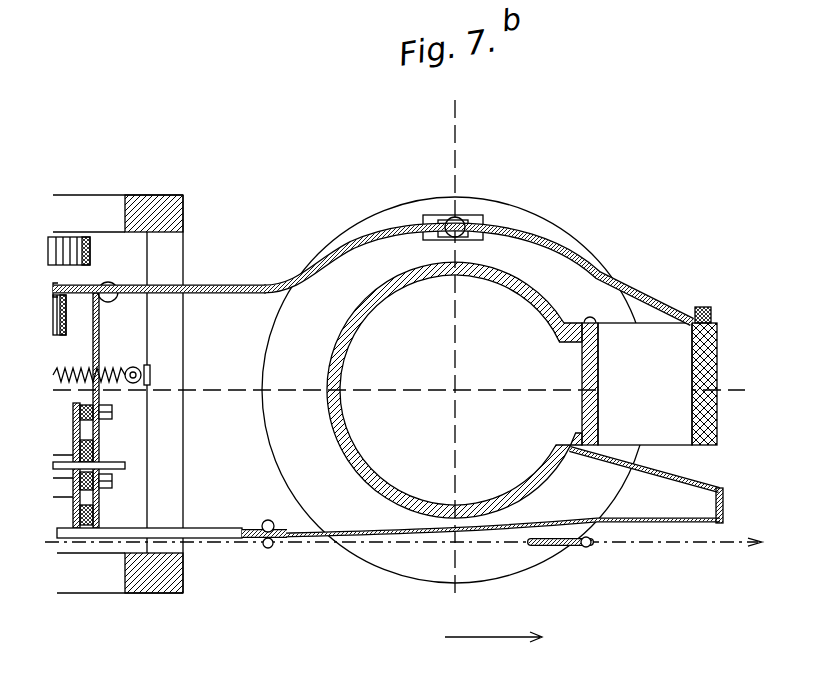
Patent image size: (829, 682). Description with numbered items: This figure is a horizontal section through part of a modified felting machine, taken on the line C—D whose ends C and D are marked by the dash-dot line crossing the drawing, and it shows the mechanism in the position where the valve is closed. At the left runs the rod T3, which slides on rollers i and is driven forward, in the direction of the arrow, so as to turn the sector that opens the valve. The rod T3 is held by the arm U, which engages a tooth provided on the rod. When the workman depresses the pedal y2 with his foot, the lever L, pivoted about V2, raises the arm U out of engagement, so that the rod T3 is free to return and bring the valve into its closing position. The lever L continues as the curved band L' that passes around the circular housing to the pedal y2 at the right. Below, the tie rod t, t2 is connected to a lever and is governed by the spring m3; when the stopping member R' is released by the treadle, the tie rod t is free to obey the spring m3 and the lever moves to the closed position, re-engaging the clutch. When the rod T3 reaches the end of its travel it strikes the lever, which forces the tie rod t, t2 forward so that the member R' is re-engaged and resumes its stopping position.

The lever L is at (159, 284).
The band L' is at (478, 274).
The arm U is at (100, 342).
The spring m3 is at (101, 365).
The rollers i is at (60, 462).
The rod T3 is at (118, 457).
The section line end C is at (136, 541).
The section line end D is at (411, 543).
The tie rod t2 is at (221, 531).
The tie rod t is at (363, 533).
The member R' is at (563, 552).
The pivot V2 is at (453, 216).
The pedal y2 is at (695, 392).